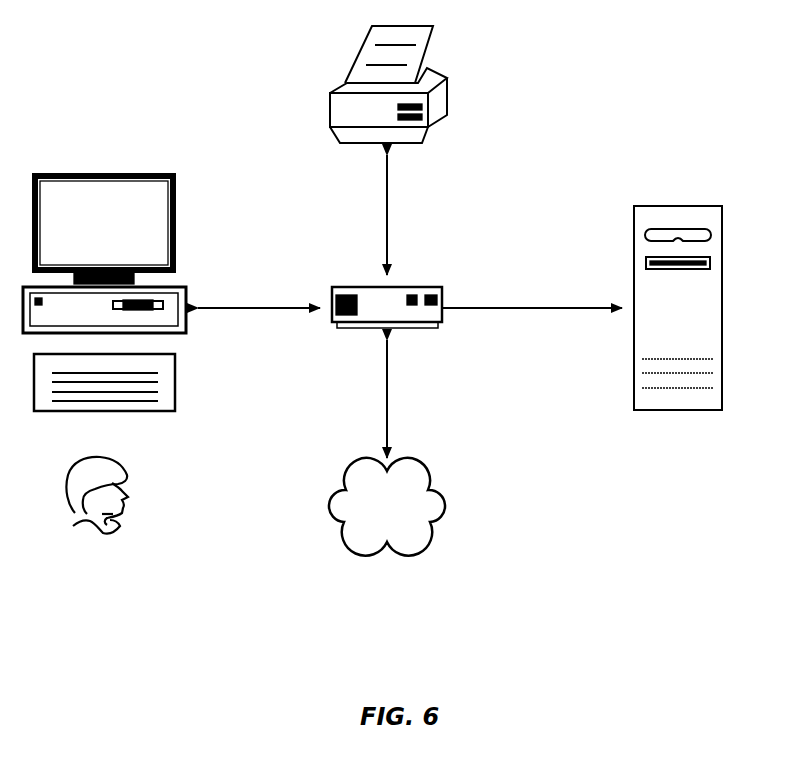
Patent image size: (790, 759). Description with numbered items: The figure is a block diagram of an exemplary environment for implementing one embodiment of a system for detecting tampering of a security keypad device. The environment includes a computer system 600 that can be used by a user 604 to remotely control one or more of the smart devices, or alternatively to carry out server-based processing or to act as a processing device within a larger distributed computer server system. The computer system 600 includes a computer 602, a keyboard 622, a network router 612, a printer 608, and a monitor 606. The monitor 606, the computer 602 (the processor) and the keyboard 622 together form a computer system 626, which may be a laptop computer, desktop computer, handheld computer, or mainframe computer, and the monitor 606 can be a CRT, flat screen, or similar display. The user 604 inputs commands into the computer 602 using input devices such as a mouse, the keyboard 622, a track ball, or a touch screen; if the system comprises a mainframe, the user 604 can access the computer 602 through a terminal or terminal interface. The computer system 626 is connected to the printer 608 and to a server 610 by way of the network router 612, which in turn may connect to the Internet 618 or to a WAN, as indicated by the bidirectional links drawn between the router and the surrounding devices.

The computer system 600 is at (619, 89).
The computer 602 is at (183, 287).
The user 604 is at (122, 465).
The monitor 606 is at (173, 170).
The printer 608 is at (330, 123).
The server 610 is at (634, 394).
The network router 612 is at (415, 287).
The Internet 618 is at (420, 470).
The keyboard 622 is at (177, 380).
The computer system 626 is at (180, 223).